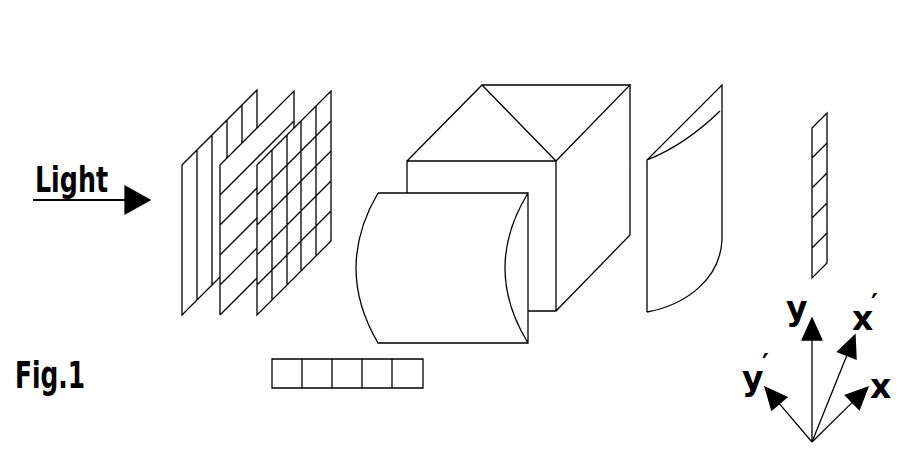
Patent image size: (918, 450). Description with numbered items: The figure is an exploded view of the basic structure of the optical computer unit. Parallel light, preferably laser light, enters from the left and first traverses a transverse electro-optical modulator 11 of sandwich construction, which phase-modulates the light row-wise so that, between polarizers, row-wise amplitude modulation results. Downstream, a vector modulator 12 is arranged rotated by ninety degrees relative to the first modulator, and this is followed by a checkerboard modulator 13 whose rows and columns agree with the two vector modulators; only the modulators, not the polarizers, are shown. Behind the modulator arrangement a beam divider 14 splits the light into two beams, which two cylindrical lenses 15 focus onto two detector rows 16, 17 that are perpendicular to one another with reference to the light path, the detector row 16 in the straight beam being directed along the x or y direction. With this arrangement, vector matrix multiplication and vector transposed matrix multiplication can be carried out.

The transverse electro-optical modulator 11 is at (230, 115).
The vector modulator 12 is at (282, 107).
The checkerboard modulator 13 is at (332, 98).
The beam divider 14 is at (523, 102).
The cylindrical lenses 15 is at (522, 298).
The detector row 16 is at (820, 128).
The detector row 17 is at (285, 375).